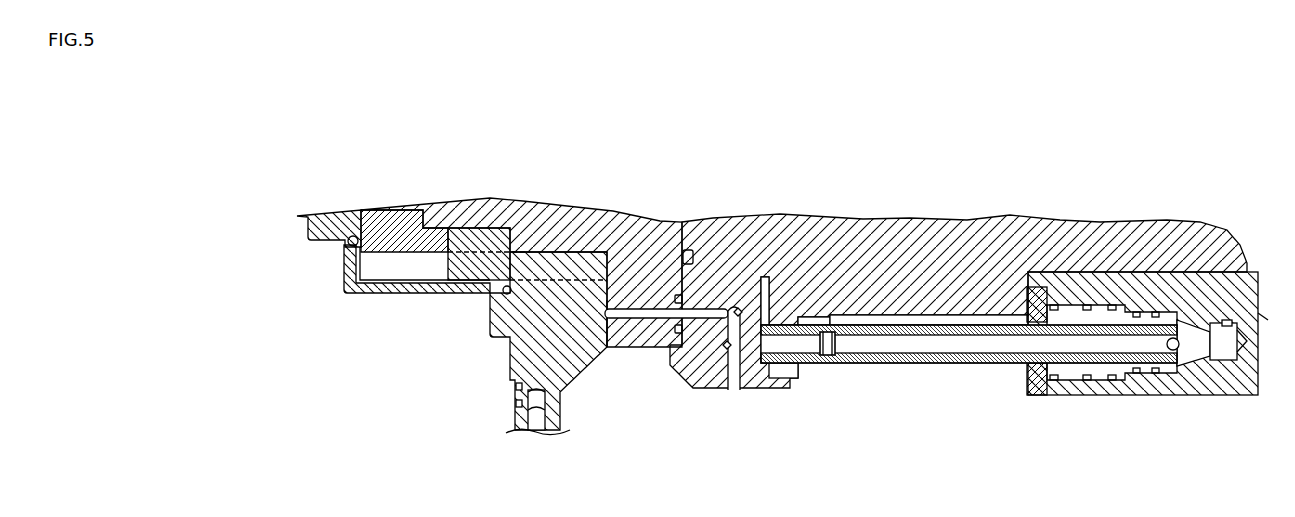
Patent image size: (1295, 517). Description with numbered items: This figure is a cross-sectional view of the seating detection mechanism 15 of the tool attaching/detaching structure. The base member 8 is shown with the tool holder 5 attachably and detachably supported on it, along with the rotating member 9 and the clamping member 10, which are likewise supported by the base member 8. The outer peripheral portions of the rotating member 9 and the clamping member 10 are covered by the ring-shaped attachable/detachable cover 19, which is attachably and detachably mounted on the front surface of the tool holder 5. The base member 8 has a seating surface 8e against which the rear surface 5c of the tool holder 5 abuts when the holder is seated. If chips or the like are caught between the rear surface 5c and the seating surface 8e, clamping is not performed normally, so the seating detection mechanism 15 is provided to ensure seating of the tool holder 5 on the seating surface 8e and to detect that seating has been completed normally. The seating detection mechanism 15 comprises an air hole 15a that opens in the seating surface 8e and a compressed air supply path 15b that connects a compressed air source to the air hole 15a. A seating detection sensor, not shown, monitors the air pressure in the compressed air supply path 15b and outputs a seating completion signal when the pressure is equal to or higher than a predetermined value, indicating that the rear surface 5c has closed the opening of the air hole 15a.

The tool holder 5 is at (505, 388).
The rear surface 5c is at (615, 348).
The base member 8 is at (715, 411).
The seating surface 8e is at (605, 330).
The rotating member 9 is at (474, 300).
The clamping member 10 is at (404, 298).
The seating detection mechanism 15 is at (790, 436).
The air hole 15a is at (647, 316).
The compressed air supply path 15b is at (916, 345).
The attachable/detachable cover 19 is at (346, 303).